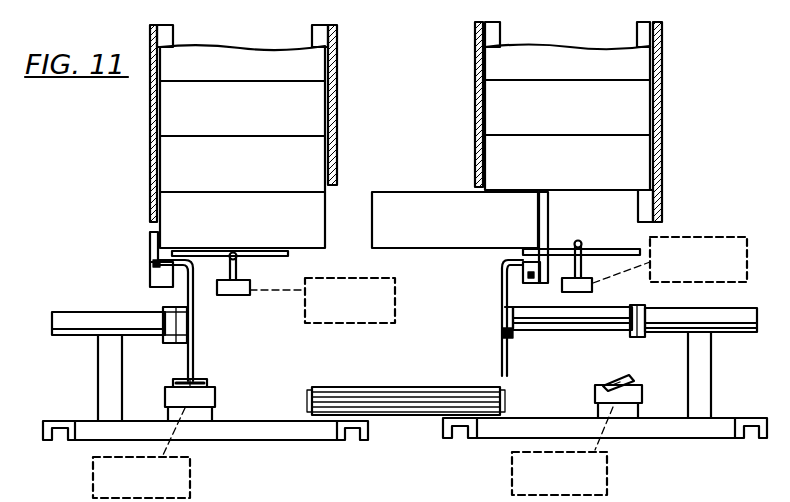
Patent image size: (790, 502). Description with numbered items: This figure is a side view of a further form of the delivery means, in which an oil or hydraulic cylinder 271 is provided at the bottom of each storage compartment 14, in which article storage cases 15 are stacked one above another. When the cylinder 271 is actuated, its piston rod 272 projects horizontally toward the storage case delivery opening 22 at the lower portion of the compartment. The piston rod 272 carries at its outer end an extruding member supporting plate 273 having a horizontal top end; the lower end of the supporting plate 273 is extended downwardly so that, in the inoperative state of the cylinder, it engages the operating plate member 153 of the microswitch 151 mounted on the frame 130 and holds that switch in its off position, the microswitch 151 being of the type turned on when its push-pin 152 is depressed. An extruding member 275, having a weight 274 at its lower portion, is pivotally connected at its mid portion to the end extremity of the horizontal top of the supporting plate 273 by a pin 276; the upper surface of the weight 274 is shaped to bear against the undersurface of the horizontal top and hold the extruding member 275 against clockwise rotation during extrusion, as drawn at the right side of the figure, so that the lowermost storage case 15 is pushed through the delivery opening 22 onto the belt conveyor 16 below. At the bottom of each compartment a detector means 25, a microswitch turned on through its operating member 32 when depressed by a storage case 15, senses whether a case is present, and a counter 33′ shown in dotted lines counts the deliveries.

The storage compartment 14 is at (240, 47).
The article storage case 15 is at (392, 172).
The storage case delivery opening 22 is at (333, 187).
The detector means 25 is at (245, 296).
The operating member 32 is at (238, 262).
The counter 33′ is at (326, 330).
The frame 130 is at (214, 441).
The microswitch 151 is at (215, 399).
The push-pin 152 is at (175, 384).
The operation member 153 is at (200, 380).
The belt conveyor 16 is at (385, 387).
The oil or hydraulic cylinder 271 is at (75, 312).
The piston rod 272 is at (565, 333).
The extruding member supporting plate 273 is at (193, 334).
The weight 274 is at (150, 283).
The extruding member 275 is at (152, 249).
The pin 276 is at (153, 265).